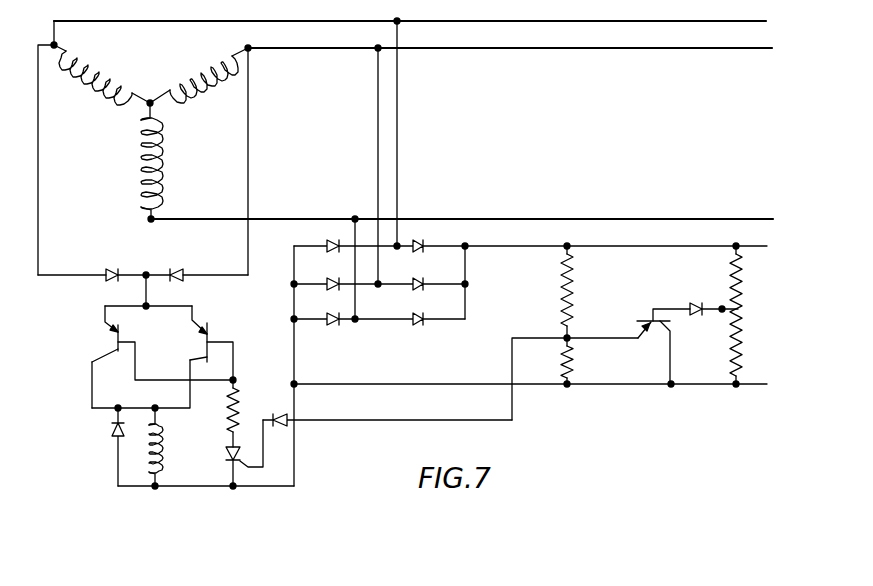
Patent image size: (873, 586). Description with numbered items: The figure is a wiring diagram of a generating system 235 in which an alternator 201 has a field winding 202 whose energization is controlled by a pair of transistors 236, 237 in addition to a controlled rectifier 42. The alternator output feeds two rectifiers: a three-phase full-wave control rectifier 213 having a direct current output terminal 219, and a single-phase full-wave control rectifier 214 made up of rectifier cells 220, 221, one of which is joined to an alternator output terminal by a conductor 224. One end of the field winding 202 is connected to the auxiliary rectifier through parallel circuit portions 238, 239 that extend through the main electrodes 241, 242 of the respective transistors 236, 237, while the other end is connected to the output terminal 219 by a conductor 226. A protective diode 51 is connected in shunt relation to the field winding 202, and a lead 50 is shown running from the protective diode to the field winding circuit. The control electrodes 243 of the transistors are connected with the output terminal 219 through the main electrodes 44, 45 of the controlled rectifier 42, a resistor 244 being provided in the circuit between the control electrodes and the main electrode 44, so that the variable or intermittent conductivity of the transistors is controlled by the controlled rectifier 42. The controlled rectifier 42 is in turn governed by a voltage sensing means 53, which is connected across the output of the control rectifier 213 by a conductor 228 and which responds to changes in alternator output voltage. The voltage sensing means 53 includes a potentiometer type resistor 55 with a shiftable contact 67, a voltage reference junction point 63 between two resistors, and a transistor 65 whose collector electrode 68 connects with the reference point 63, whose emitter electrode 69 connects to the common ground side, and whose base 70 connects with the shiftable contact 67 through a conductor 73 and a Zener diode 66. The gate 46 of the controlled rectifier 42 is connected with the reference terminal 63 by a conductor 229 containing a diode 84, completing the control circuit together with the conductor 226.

The alternator 201 is at (222, 129).
The generating system 235 is at (565, 49).
The rectifier cell 220 is at (108, 268).
The rectifier cell 221 is at (185, 268).
The control rectifier 214 is at (143, 258).
The conductor 224 is at (148, 272).
The control rectifier 213 is at (400, 313).
The output terminal 219 is at (294, 385).
The conductor 228 is at (405, 385).
The conductor 229 is at (411, 420).
The conductor 226 is at (298, 481).
The diode 84 is at (291, 414).
The transistor 236 is at (104, 343).
The transistor 237 is at (201, 342).
The main electrode 241 is at (115, 333).
The control electrode 243 is at (127, 340).
The main electrode 242 is at (117, 354).
The parallel circuit portion 238 is at (92, 383).
The parallel circuit portion 239 is at (188, 408).
The protective diode 51 is at (110, 432).
The conductor 50 is at (117, 465).
The field winding 202 is at (164, 458).
The resistor 244 is at (240, 397).
The controlled rectifier 42 is at (228, 457).
The main electrode 44 is at (249, 435).
The main electrode 45 is at (243, 470).
The gate 46 is at (249, 461).
The voltage reference junction point 63 is at (567, 339).
The potentiometer type resistor 55 is at (740, 311).
The voltage sensing means 53 is at (645, 303).
The transistor 65 is at (647, 317).
The collector electrode 68 is at (637, 321).
The emitter electrode 69 is at (670, 331).
The base 70 is at (652, 331).
The conductor 73 is at (690, 302).
The diode 66 is at (722, 308).
The shiftable contact 67 is at (722, 312).